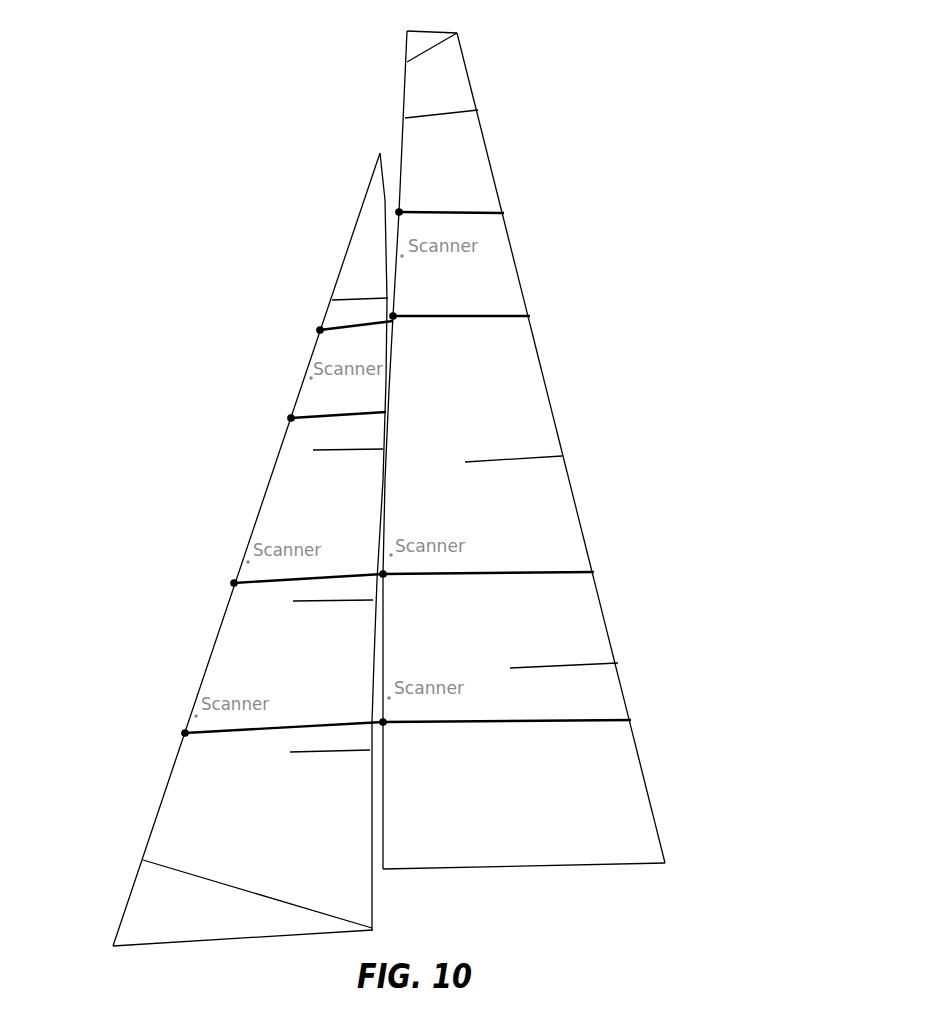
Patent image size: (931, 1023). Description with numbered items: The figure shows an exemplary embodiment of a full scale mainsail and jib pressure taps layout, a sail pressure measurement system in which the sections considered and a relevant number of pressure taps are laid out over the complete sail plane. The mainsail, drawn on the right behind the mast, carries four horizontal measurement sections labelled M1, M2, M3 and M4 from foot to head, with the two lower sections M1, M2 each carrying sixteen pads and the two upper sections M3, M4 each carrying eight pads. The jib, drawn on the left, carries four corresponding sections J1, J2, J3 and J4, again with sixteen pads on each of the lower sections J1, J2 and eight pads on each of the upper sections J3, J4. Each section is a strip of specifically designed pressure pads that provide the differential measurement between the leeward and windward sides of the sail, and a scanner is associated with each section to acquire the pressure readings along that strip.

The mainsail pad row M4 (8 pads) M4 is at (532, 197).
The mainsail pad row M3 (8 pads) M3 is at (542, 305).
The mainsail pad row M2 (16 pads) M2 is at (578, 557).
The mainsail pad row M1 (16 pads) M1 is at (593, 705).
The jib pad row J4 (8 pads) J4 is at (278, 320).
The jib pad row J3 (8 pads) J3 is at (259, 408).
The jib pad row J2 (16 pads) J2 is at (225, 569).
The jib pad row J1 (16 pads) J1 is at (199, 720).